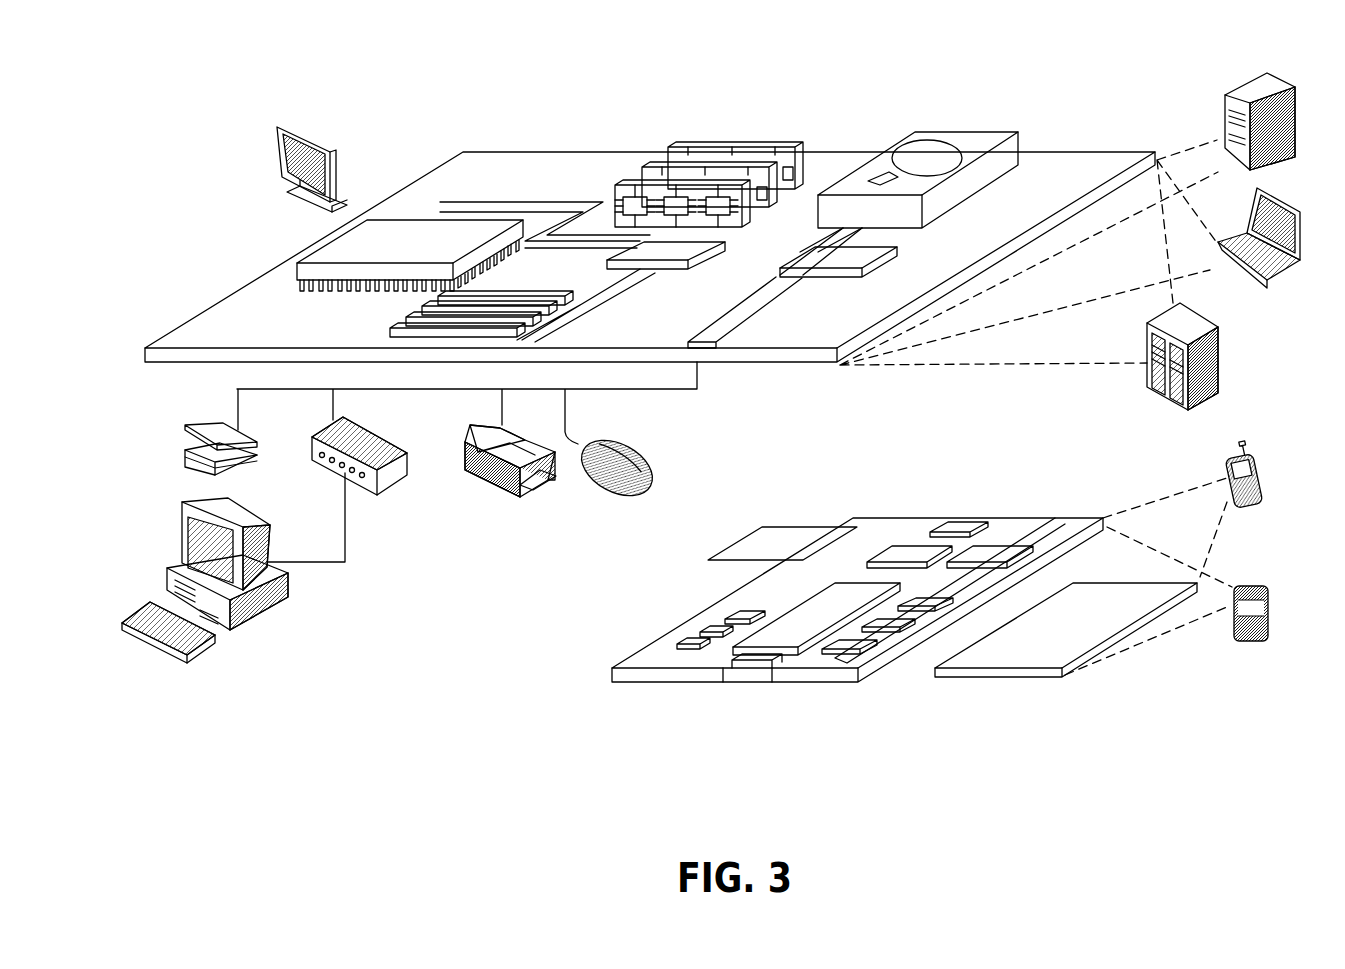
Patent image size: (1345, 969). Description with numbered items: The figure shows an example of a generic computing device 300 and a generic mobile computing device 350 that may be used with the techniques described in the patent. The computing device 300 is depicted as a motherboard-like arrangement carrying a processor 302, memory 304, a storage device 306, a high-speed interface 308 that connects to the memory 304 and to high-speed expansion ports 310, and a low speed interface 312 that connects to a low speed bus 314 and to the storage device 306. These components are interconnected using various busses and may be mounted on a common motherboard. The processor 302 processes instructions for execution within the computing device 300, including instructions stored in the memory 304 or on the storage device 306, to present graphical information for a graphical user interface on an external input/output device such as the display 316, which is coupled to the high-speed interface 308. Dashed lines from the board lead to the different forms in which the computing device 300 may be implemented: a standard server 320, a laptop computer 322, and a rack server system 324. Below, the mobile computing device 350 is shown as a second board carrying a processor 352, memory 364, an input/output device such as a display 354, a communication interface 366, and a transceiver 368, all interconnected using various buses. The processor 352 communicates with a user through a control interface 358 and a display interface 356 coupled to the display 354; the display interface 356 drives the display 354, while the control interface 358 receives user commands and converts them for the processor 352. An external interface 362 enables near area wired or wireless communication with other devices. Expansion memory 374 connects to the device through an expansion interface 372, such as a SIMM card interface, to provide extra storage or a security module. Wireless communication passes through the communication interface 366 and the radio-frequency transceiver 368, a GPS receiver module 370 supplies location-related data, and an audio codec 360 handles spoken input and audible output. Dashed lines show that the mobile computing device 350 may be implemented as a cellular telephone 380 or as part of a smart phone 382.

The generic computing device 300 is at (418, 84).
The processor 302 is at (314, 244).
The memory 304 is at (722, 146).
The storage device 306 is at (921, 130).
The high-speed interface 308 is at (667, 269).
The high-speed expansion ports 310 is at (391, 326).
The low speed interface 312 is at (811, 250).
The low speed bus 314 is at (700, 340).
The display 316 is at (287, 125).
The standard server 320 is at (1234, 92).
The laptop computer 322 is at (1289, 272).
The rack server system 324 is at (1220, 350).
The generic mobile computing device 350 is at (569, 698).
The processor 352 is at (800, 620).
The display 354 is at (1127, 582).
The display interface 356 is at (868, 652).
The control interface 358 is at (900, 628).
The audio codec 360 is at (955, 598).
The external interface 362 is at (750, 683).
The memory 364 is at (700, 632).
The communication interface 366 is at (902, 545).
The transceiver 368 is at (1000, 545).
The GPS receiver module 370 is at (962, 522).
The expansion interface 372 is at (853, 527).
The expansion memory 374 is at (765, 526).
The cellular telephone 380 is at (1233, 456).
The smart phone 382 is at (1260, 585).